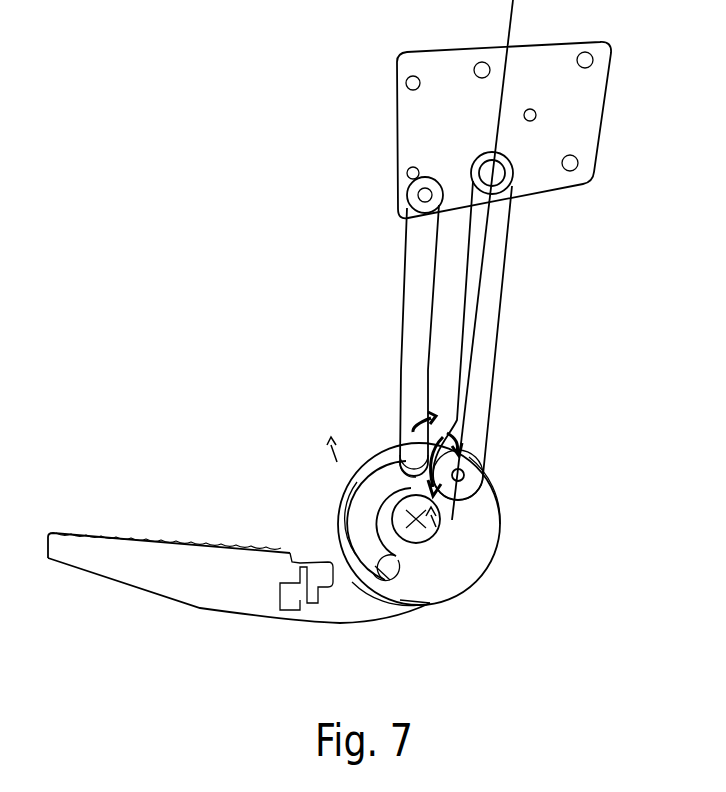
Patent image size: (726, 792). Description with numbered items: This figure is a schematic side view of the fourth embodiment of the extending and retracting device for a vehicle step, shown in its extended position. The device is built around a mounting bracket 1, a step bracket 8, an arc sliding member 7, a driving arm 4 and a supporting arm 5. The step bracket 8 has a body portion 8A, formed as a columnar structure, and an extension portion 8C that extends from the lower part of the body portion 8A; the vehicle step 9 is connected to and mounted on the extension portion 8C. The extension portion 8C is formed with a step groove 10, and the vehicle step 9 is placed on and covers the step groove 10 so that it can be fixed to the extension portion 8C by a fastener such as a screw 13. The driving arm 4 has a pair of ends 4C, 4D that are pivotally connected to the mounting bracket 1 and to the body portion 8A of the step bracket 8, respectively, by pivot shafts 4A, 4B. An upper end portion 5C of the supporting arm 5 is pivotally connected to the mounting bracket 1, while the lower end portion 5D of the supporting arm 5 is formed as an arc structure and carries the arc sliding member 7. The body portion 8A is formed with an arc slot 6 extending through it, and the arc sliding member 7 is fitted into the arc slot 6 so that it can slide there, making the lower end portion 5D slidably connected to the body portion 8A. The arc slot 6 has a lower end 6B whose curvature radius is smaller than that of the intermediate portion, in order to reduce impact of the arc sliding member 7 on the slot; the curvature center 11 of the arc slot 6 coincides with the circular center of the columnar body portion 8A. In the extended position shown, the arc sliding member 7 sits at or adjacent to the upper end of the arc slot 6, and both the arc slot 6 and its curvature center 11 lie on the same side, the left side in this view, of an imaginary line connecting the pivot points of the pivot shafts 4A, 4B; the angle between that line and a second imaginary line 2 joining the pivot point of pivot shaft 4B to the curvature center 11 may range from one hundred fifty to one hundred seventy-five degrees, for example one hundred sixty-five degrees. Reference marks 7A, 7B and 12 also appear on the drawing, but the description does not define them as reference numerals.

The mounting bracket 1 is at (440, 138).
The rod 2 is at (470, 467).
The driving arm 4 is at (483, 312).
The pivot shaft 4A is at (497, 190).
The pivot shaft 4B is at (466, 469).
The end of driving arm 4C is at (513, 193).
The end of driving arm 4D is at (470, 475).
The supporting arm 5 is at (410, 323).
The upper end portion of supporting arm 5C is at (410, 210).
The lower end portion of supporting arm 5D is at (400, 467).
The arc slot 6 is at (380, 548).
The lower end of arc slot 6B is at (373, 573).
The arc sliding member 7 is at (370, 498).
The ring end 7A is at (388, 455).
The ring segment 7B is at (345, 492).
The step bracket 8 is at (488, 552).
The body portion 8A is at (463, 543).
The extension portion 8C is at (365, 610).
The vehicle step 9 is at (172, 582).
The step groove 10 is at (313, 590).
The curvature center 11 is at (425, 529).
The stop 12 is at (418, 605).
The screw 13 is at (300, 563).